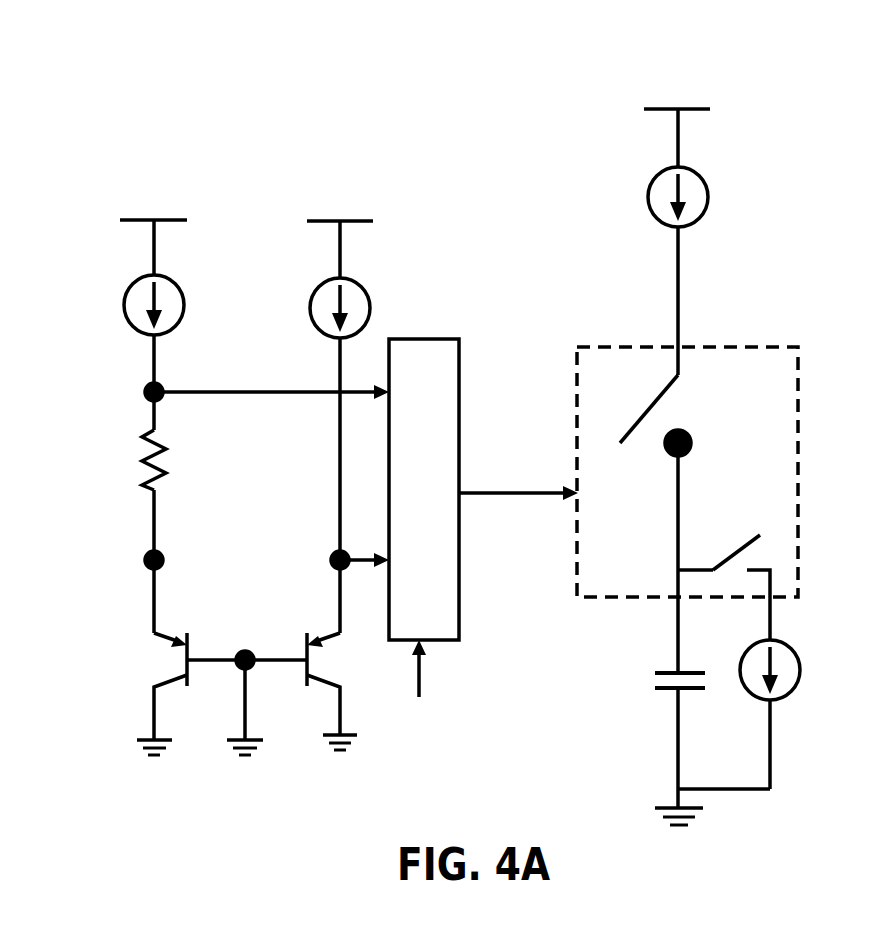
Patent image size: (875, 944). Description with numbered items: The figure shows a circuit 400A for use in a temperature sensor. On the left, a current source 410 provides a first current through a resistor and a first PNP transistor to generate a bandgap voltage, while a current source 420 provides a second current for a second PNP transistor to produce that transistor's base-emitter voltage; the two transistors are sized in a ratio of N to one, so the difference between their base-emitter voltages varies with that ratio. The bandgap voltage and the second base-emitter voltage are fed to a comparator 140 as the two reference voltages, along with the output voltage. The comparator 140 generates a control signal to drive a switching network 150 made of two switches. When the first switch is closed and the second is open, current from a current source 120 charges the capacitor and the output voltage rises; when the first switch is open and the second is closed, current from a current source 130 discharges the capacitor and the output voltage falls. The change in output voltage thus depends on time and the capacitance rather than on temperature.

The circuit 400A is at (766, 90).
The current source 410 is at (131, 281).
The current source 420 is at (321, 283).
The current source 120 is at (653, 176).
The current source 130 is at (794, 648).
The comparator 140 is at (459, 597).
The switching network 150 is at (769, 346).